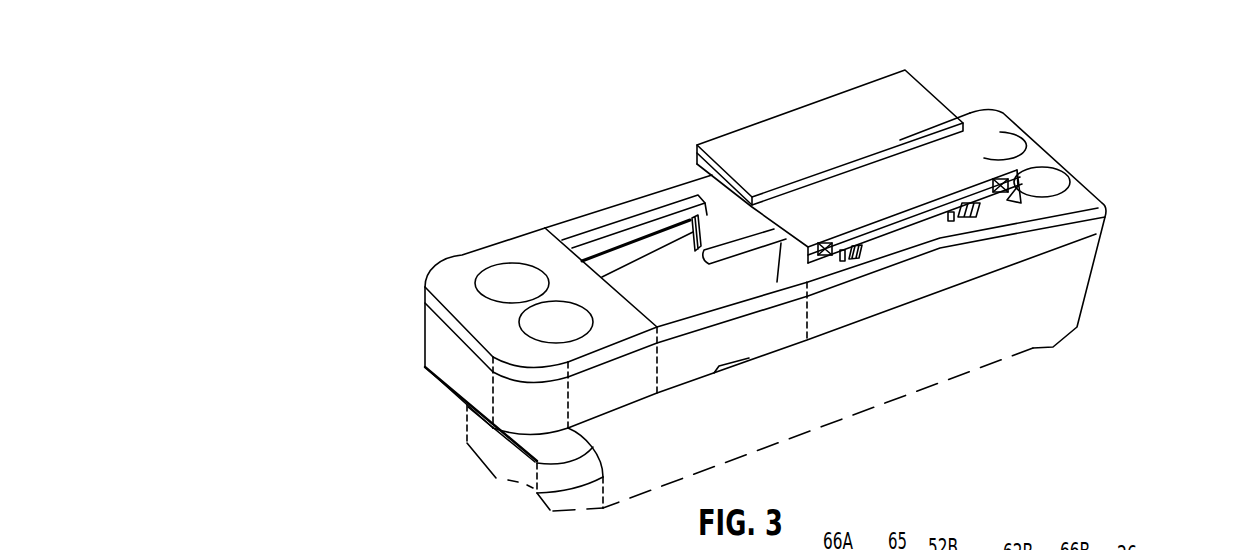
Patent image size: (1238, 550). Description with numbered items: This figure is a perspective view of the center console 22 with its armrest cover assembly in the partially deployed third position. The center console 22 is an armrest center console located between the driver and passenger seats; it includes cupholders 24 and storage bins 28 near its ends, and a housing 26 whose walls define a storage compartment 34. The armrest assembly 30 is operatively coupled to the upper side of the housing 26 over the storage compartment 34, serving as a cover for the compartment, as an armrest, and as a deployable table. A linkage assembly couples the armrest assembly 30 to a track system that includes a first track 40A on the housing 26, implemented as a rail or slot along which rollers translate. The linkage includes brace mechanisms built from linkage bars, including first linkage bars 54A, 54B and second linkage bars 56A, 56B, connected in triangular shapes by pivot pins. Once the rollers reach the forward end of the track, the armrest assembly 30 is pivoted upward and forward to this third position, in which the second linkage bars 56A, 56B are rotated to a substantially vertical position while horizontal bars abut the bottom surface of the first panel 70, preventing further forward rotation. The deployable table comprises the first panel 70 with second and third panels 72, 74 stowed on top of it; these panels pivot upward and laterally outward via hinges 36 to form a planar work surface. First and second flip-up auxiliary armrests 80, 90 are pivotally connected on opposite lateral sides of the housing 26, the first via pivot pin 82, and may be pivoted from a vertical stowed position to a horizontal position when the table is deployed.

The center console 22 is at (438, 343).
The cupholders 24 is at (507, 277).
The housing 26 is at (1074, 283).
The storage bins 28 is at (928, 232).
The armrest assembly 30 is at (861, 138).
The storage compartment 34 is at (642, 288).
The hinges 36 is at (826, 258).
The first track 40A is at (742, 236).
The first linkage bar 54A is at (866, 250).
The first linkage bar 54B is at (983, 216).
The second linkage bar 56A is at (848, 257).
The second linkage bar 56B is at (960, 222).
The first panel 70 is at (695, 150).
The second panel 72 is at (812, 125).
The third panel 74 is at (897, 163).
The first flip-up auxiliary armrest 80 is at (590, 240).
The pivot pin 82 is at (693, 240).
The second flip-up auxiliary armrest 90 is at (672, 372).